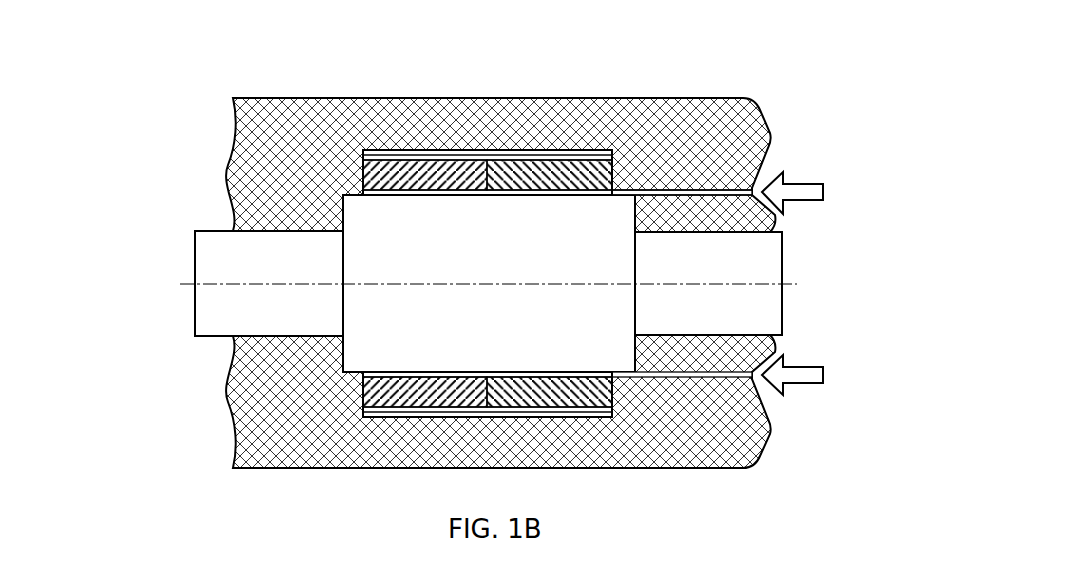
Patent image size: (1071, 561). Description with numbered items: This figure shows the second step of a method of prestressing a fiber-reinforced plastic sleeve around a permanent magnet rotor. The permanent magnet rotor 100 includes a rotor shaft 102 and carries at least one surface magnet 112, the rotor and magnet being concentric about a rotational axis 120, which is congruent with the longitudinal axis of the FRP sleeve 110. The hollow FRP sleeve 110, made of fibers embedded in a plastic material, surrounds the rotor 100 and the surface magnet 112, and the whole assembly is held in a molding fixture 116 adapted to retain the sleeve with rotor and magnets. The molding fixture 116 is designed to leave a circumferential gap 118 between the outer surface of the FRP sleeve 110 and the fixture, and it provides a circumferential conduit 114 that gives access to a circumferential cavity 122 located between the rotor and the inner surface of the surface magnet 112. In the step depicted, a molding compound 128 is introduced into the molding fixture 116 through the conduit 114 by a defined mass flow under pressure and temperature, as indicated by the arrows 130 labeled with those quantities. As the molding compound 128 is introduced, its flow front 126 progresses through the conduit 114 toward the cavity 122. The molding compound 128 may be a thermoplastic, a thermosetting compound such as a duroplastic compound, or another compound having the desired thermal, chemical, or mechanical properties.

The permanent magnet rotor 100 is at (165, 290).
The rotor shaft 102 is at (738, 255).
The FRP sleeve 110 is at (572, 155).
The surface magnet 112 is at (512, 178).
The circumferential conduit 114 is at (683, 190).
The molding fixture 116 is at (272, 423).
The circumferential gap 118 is at (543, 149).
The rotational axis 120 is at (242, 282).
The circumferential cavity 122 is at (387, 192).
The flow front 126 is at (592, 192).
The molding compound 128 is at (725, 192).
The arrows 130 is at (873, 187).